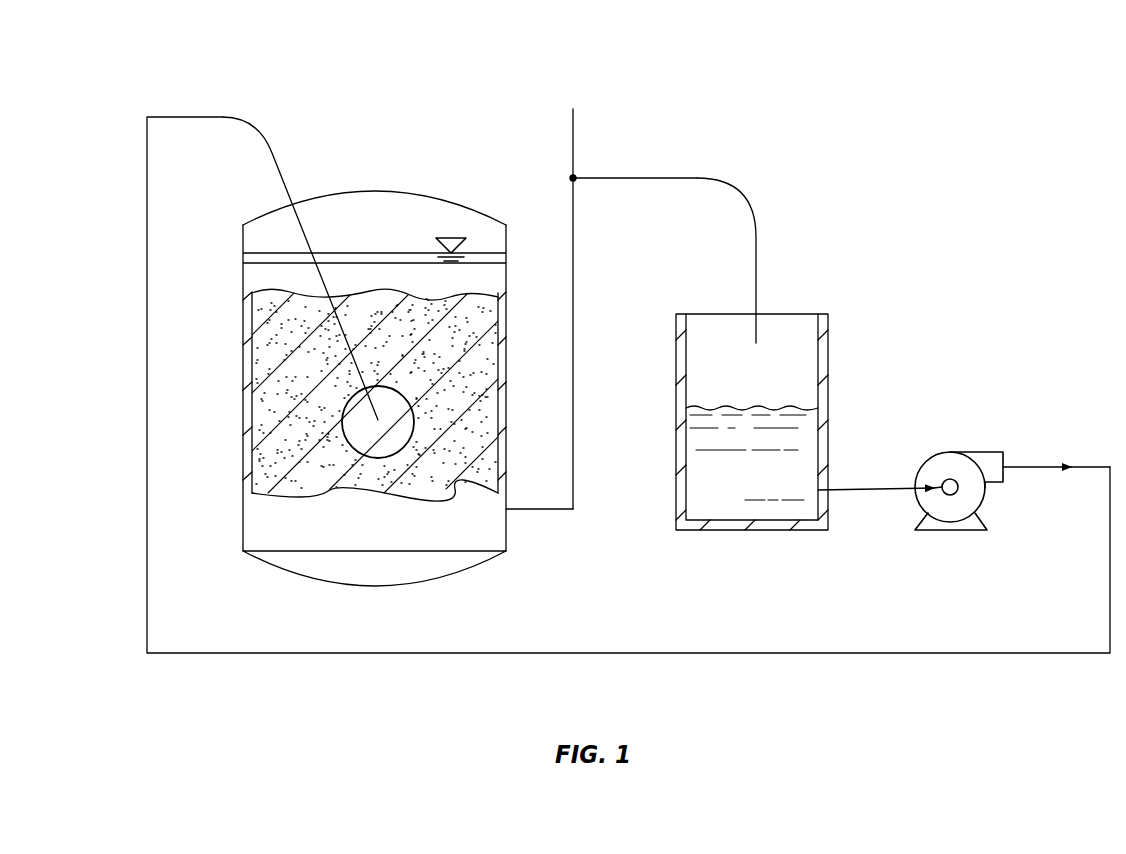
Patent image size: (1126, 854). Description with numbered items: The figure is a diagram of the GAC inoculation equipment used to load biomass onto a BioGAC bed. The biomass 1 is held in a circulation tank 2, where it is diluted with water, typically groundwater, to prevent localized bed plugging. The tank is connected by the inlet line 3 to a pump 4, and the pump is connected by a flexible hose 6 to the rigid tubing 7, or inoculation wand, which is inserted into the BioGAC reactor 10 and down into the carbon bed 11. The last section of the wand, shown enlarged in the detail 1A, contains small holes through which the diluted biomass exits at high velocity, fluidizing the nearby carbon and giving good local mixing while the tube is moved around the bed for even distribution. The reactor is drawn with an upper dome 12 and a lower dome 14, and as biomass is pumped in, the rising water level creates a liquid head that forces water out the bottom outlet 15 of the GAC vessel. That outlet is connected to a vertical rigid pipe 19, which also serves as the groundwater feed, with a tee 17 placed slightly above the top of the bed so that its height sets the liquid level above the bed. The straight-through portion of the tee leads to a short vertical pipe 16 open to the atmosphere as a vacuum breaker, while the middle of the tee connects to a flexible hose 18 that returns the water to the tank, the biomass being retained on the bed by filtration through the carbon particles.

The flexible hose 6 is at (152, 102).
The rigid tubing 7 is at (288, 174).
The BioGAC reactor 10 is at (242, 352).
The carbon bed 11 is at (275, 403).
The upper dome of reactor 12 is at (261, 215).
The lower dome of reactor 14 is at (273, 568).
The outlet of the GAC vessel 15 is at (510, 512).
The vertical pipe open to the atmosphere 16 is at (570, 134).
The tee 17 is at (588, 171).
The flexible hose 18 is at (743, 191).
The rigid pipe 19 is at (573, 278).
The biomass 1 is at (800, 443).
The sample 1A is at (403, 395).
The circulation tank 2 is at (829, 352).
The line 3 is at (898, 490).
The pump 4 is at (985, 452).